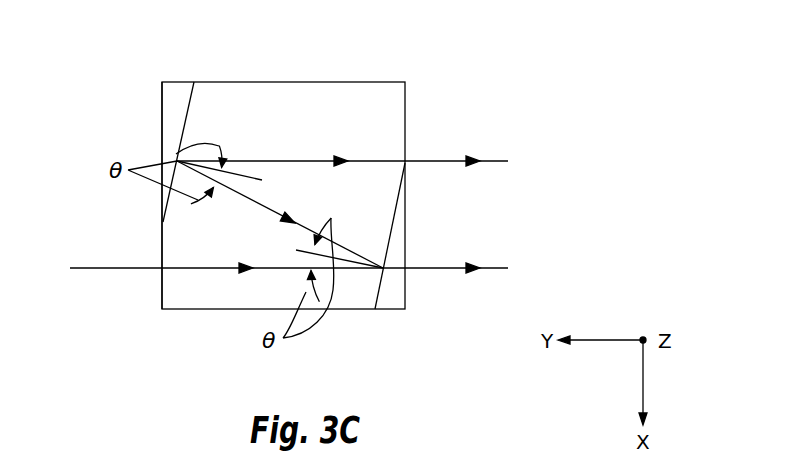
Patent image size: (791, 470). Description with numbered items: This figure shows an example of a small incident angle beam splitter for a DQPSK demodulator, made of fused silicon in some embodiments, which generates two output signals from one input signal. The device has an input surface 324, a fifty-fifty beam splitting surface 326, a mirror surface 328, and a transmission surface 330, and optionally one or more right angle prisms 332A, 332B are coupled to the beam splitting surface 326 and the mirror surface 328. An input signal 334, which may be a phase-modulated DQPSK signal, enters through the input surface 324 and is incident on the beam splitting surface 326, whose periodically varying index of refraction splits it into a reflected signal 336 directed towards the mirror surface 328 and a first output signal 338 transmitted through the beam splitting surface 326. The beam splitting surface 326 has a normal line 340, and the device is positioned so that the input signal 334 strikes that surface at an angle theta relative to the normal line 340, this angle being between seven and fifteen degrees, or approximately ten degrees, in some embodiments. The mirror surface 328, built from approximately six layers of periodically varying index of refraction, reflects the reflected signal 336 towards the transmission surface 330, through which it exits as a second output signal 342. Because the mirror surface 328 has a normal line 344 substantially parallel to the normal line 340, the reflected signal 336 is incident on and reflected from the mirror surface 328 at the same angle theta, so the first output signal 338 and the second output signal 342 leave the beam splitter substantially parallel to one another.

The input surface 324 is at (162, 288).
The 50:50 beam splitting surface 326 is at (392, 247).
The mirror surface 328 is at (176, 156).
The transmission surface 330 is at (405, 137).
The right angle prism 332A is at (405, 292).
The right angle prism 332B is at (162, 100).
The input signal 334 is at (97, 268).
The reflected signal 336 is at (272, 209).
The first output signal 338 is at (498, 268).
The normal line 340 is at (354, 254).
The second output signal 342 is at (498, 161).
The normal line 344 is at (249, 178).